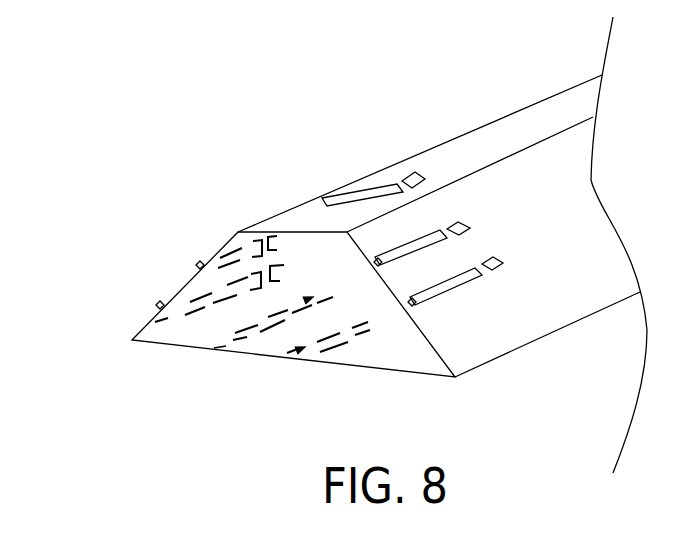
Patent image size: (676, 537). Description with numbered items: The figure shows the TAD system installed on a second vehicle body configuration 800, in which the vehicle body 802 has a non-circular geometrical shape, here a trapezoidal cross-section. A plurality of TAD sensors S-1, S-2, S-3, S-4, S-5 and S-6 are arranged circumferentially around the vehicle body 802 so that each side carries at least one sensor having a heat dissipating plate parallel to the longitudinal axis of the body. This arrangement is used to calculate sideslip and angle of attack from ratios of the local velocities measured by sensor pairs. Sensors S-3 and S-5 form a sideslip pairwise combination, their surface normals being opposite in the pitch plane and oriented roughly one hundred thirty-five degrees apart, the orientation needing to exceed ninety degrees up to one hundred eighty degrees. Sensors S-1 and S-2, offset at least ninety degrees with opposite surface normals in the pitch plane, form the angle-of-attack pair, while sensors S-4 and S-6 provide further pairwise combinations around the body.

The second vehicle body configuration 800 is at (120, 81).
The vehicle body 802 is at (452, 140).
The sensor S-1 is at (383, 258).
The sensor S-2 is at (160, 305).
The sensor S-3 is at (220, 347).
The sensor S-4 is at (200, 265).
The sensor S-5 is at (417, 297).
The sensor S-6 is at (312, 209).